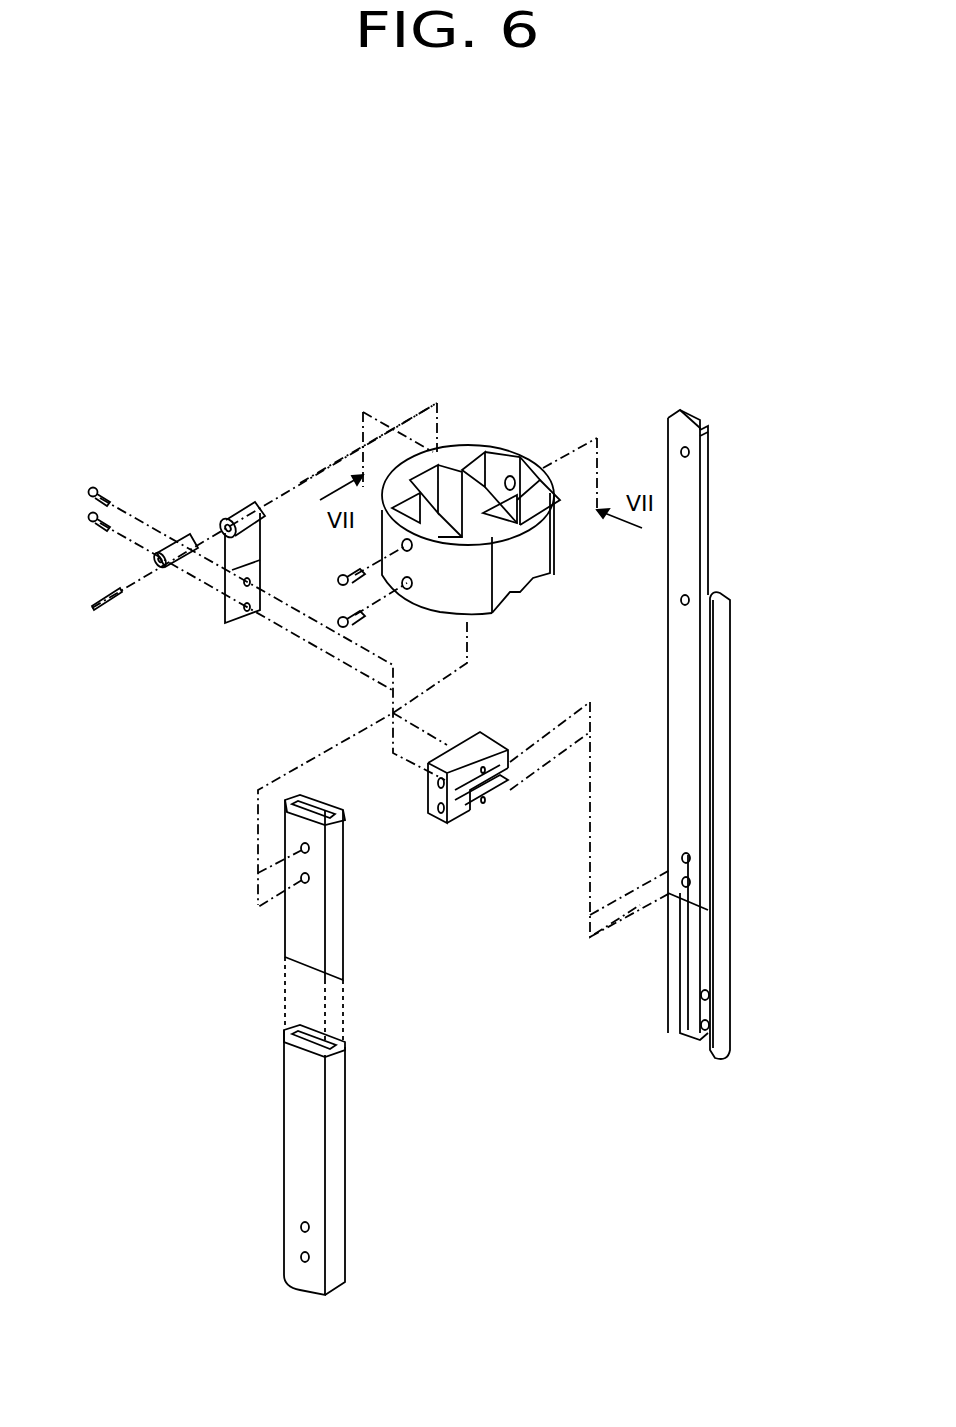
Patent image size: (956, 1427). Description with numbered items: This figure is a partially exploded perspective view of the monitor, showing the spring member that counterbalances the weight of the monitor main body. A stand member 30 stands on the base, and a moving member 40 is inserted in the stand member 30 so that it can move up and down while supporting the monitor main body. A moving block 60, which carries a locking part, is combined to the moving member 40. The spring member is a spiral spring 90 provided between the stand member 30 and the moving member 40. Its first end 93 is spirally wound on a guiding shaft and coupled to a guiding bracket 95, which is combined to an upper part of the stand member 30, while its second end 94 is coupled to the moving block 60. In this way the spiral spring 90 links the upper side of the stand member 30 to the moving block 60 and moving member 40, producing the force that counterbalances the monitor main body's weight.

The stand member 30 is at (292, 938).
The moving member 40 is at (335, 815).
The moving block 60 is at (473, 822).
The spiral spring 90 is at (261, 541).
The first end 93 is at (223, 520).
The second end 94 is at (200, 430).
The guiding bracket 95 is at (530, 490).